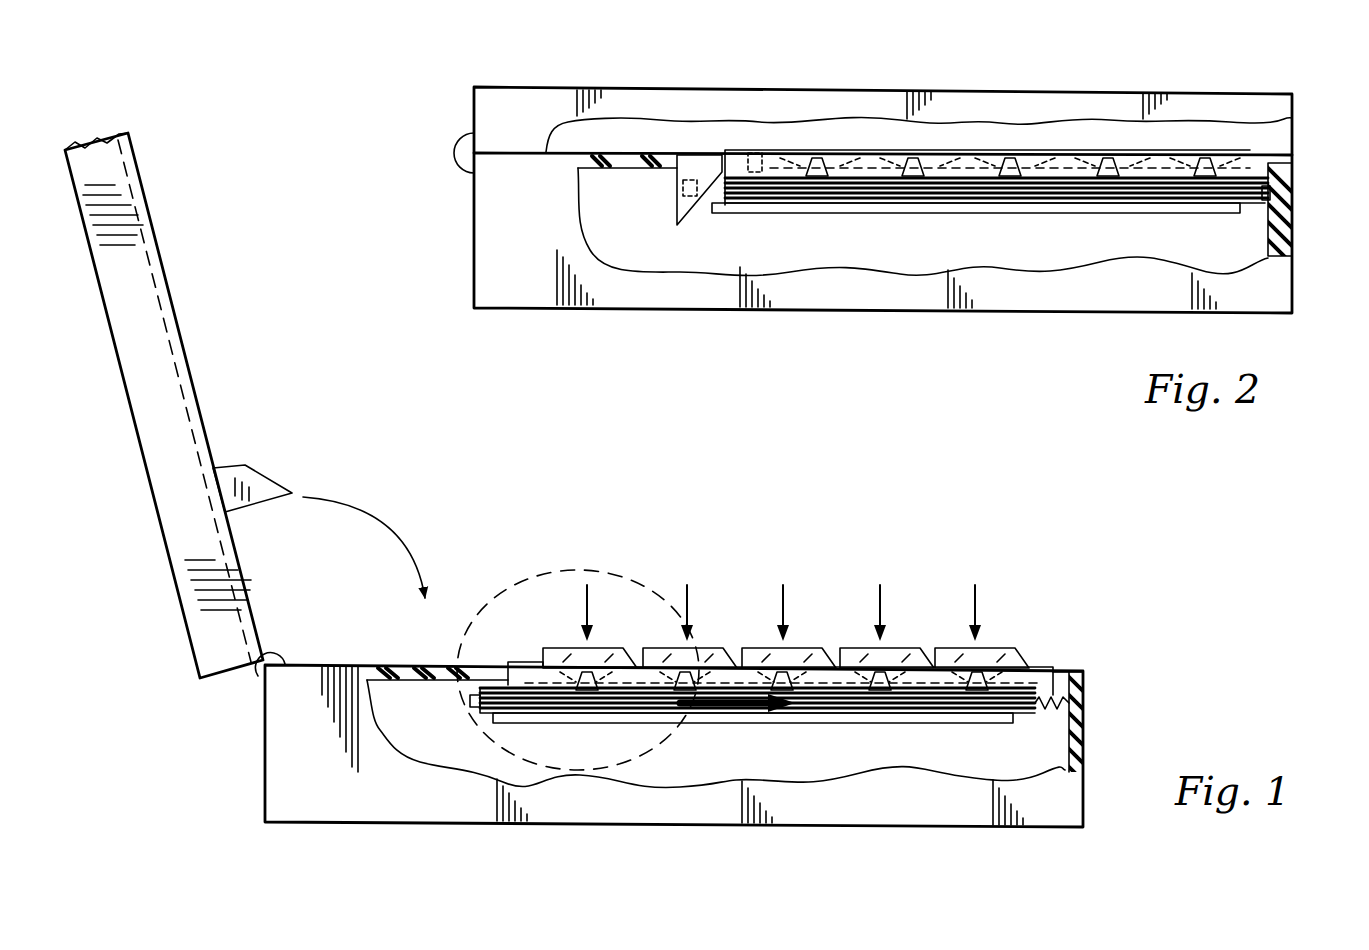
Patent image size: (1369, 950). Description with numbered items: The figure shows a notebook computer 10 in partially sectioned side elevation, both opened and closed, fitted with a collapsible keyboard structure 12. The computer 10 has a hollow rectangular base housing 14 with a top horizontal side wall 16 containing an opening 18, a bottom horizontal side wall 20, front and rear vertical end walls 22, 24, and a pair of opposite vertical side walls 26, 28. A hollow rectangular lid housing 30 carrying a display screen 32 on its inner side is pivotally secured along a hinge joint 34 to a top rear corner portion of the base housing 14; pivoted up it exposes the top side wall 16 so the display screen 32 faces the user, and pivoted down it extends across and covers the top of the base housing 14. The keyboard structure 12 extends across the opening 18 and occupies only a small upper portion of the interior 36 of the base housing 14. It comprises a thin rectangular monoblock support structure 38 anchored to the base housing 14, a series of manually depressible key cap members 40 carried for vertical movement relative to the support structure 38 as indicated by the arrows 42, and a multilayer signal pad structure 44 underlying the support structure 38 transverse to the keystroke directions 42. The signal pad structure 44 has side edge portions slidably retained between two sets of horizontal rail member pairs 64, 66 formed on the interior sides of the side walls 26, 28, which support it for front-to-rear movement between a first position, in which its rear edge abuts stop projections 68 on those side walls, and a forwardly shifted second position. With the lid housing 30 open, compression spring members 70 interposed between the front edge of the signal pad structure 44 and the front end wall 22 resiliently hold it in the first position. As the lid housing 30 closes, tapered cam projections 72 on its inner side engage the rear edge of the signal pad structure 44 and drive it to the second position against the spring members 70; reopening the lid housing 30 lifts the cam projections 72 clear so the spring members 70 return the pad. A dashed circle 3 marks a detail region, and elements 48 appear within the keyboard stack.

In FIG. 1, the detail region 3 is at (470, 575).
In FIG. 2, the notebook computer 10 is at (424, 203).
In FIG. 1, the notebook computer 10 is at (180, 712).
In FIG. 2, the collapsible keyboard structure 12 is at (879, 142).
In FIG. 1, the collapsible keyboard structure 12 is at (748, 590).
In FIG. 2, the base housing 14 is at (805, 313).
In FIG. 1, the base housing 14 is at (595, 829).
In FIG. 2, the top horizontal side wall 16 is at (575, 152).
In FIG. 1, the top horizontal side wall 16 is at (365, 665).
In FIG. 2, the opening 18 is at (668, 153).
In FIG. 1, the opening 18 is at (440, 665).
In FIG. 2, the bottom horizontal side wall 20 is at (950, 313).
In FIG. 1, the bottom horizontal side wall 20 is at (742, 827).
In FIG. 2, the front vertical end wall 22 is at (1270, 258).
In FIG. 1, the front vertical end wall 22 is at (1066, 770).
In FIG. 2, the rear vertical end wall 24 is at (474, 255).
In FIG. 1, the rear vertical end wall 24 is at (265, 760).
In FIG. 2, the vertical side wall 26 is at (1144, 297).
In FIG. 1, the vertical side wall 26 is at (937, 811).
In FIG. 2, the vertical side wall 28 is at (1226, 259).
In FIG. 1, the vertical side wall 28 is at (1004, 759).
In FIG. 2, the lid housing 30 is at (986, 86).
In FIG. 1, the lid housing 30 is at (88, 346).
In FIG. 1, the display screen 32 is at (185, 256).
In FIG. 2, the hinge joint 34 is at (455, 153).
In FIG. 1, the hinge joint 34 is at (255, 678).
In FIG. 2, the interior 36 is at (1064, 240).
In FIG. 1, the interior 36 is at (855, 750).
In FIG. 2, the monoblock support structure 38 is at (1292, 153).
In FIG. 1, the monoblock support structure 38 is at (1036, 668).
In FIG. 2, the key cap members 40 is at (825, 152).
In FIG. 1, the key cap members 40 is at (640, 648).
In FIG. 1, the arrows 42 is at (586, 605).
In FIG. 2, the multilayer signal pad structure 44 is at (1012, 216).
In FIG. 1, the multilayer signal pad structure 44 is at (805, 726).
In FIG. 2, the spacers 48 is at (821, 178).
In FIG. 1, the spacers 48 is at (794, 668).
In FIG. 1, the horizontal rail member pair 64 is at (515, 665).
In FIG. 2, the horizontal rail member pair 66 is at (805, 212).
In FIG. 1, the horizontal rail member pair 66 is at (570, 723).
In FIG. 2, the stop projections 68 is at (682, 188).
In FIG. 1, the stop projections 68 is at (470, 700).
In FIG. 2, the compression spring members 70 is at (1265, 201).
In FIG. 1, the compression spring members 70 is at (1062, 712).
In FIG. 2, the tapered cam projections 72 is at (696, 214).
In FIG. 1, the tapered cam projections 72 is at (268, 486).